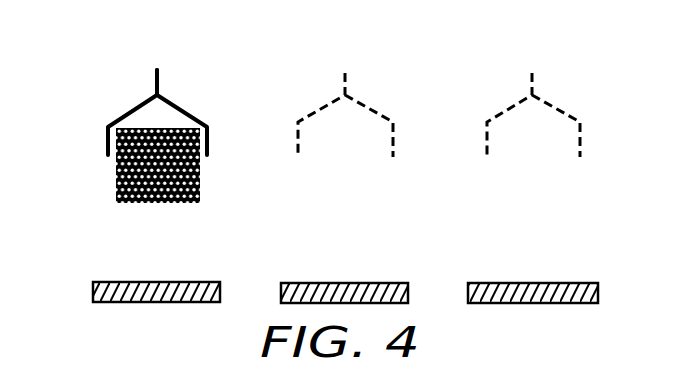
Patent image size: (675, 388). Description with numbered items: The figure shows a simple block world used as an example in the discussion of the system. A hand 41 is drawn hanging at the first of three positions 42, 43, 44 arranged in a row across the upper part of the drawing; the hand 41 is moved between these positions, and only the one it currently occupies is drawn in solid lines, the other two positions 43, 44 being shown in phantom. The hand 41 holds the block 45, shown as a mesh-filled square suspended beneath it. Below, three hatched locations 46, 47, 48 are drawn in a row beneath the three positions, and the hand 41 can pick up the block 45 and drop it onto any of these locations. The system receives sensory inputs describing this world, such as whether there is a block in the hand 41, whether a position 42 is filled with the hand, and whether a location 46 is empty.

The hand 41 is at (108, 128).
The position 42 is at (173, 50).
The position 43 is at (372, 50).
The position 44 is at (560, 50).
The block 45 is at (117, 198).
The location 46 is at (156, 275).
The location 47 is at (344, 275).
The location 48 is at (533, 275).